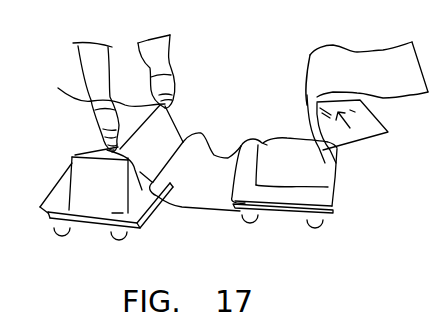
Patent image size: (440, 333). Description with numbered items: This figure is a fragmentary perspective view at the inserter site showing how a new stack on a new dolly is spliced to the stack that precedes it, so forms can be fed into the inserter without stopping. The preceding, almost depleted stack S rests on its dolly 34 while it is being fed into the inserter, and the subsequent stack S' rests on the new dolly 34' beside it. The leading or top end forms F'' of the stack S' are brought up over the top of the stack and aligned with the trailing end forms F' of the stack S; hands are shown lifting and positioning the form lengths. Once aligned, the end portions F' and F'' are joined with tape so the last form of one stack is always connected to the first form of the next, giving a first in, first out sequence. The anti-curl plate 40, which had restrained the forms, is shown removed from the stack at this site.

The dolly 34 is at (268, 233).
The dolly 34' is at (103, 233).
The anti-curl plate 40 is at (363, 133).
The stack S is at (284, 176).
The stack S' is at (155, 159).
The end forms F' is at (116, 142).
The end forms F'' is at (100, 87).